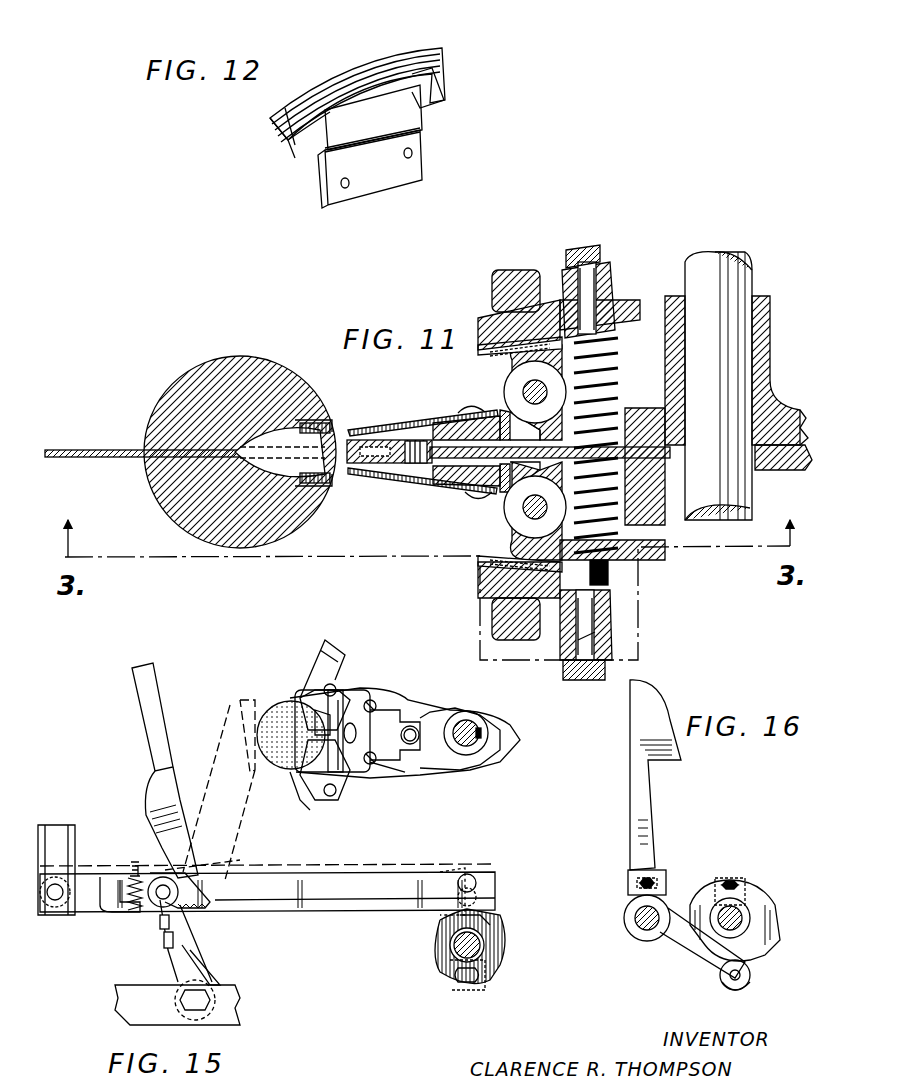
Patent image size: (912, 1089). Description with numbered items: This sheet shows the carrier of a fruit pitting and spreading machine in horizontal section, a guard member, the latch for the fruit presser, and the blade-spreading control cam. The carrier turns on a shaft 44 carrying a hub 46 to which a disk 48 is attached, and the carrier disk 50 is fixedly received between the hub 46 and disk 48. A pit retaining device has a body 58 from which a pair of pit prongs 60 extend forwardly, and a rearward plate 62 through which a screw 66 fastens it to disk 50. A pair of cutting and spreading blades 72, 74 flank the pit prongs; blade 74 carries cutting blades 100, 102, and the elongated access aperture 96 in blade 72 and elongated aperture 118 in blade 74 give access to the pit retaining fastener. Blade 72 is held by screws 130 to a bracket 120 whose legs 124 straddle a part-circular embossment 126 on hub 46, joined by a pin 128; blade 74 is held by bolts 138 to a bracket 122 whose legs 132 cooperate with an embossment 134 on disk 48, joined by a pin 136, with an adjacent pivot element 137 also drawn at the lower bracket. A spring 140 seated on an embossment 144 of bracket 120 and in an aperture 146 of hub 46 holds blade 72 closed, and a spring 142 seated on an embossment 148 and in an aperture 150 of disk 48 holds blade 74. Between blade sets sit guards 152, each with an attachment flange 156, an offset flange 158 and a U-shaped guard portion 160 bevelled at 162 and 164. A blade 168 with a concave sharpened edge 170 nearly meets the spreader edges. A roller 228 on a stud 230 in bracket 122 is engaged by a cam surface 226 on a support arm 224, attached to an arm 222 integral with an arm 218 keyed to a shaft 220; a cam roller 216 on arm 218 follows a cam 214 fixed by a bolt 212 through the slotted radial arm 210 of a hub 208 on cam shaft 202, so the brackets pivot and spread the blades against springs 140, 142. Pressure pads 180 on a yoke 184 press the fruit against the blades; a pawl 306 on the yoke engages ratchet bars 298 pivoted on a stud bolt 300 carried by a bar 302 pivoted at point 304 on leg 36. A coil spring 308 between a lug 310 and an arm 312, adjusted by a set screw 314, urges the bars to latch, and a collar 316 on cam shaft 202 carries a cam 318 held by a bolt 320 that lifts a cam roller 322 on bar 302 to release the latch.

In FIG. 15, the leg 36 is at (50, 828).
In FIG. 11, the shaft 44 is at (712, 265).
In FIG. 15, the shaft 44 is at (475, 745).
In FIG. 11, the hub 46 is at (765, 365).
In FIG. 15, the hub 46 is at (490, 733).
In FIG. 11, the disk 48 is at (775, 478).
In FIG. 15, the disk 48 is at (432, 712).
In FIG. 11, the disk 50 is at (786, 416).
In FIG. 15, the disk 50 is at (390, 690).
In FIG. 11, the body 58 is at (335, 466).
In FIG. 11, the pit prongs 60 is at (296, 425).
In FIG. 15, the pit prongs 60 is at (330, 722).
In FIG. 11, the plate 62 is at (508, 462).
In FIG. 11, the screw 66 is at (440, 425).
In FIG. 11, the cutting and spreading blade 72 is at (362, 425).
In FIG. 11, the cutting and spreading blade 74 is at (362, 487).
In FIG. 15, the cutting and spreading blade 74 is at (365, 770).
In FIG. 11, the elongated access aperture 96 is at (375, 428).
In FIG. 15, the cutting blade 100 is at (300, 790).
In FIG. 15, the cutting blade 102 is at (300, 696).
In FIG. 11, the elongated aperture 118 is at (392, 484).
In FIG. 11, the bracket 120 is at (492, 330).
In FIG. 11, the bracket 122 is at (490, 576).
In FIG. 15, the bracket 122 is at (395, 752).
In FIG. 11, the legs 124 is at (500, 352).
In FIG. 11, the part-circular embossment 126 is at (515, 382).
In FIG. 11, the pin 128 is at (523, 394).
In FIG. 11, the screws 130 is at (460, 408).
In FIG. 11, the legs 132 is at (505, 560).
In FIG. 11, the part-circular embossment 134 is at (470, 500).
In FIG. 11, the pin 136 is at (520, 520).
In FIG. 11, the lower pivot pin 137 is at (487, 506).
In FIG. 11, the bolts 138 is at (480, 500).
In FIG. 15, the bolts 138 is at (408, 765).
In FIG. 11, the spring 140 is at (603, 376).
In FIG. 11, the spring 142 is at (620, 512).
In FIG. 11, the embossment 144 is at (615, 330).
In FIG. 11, the aperture 146 is at (628, 412).
In FIG. 11, the embossment 148 is at (615, 580).
In FIG. 11, the aperture 150 is at (625, 480).
In FIG. 12, the guard 152 is at (310, 178).
In FIG. 15, the guard 152 is at (318, 640).
In FIG. 12, the attachment flange 156 is at (385, 178).
In FIG. 12, the offset flange 158 is at (390, 119).
In FIG. 12, the guard portion 160 is at (290, 138).
In FIG. 12, the bevel 162 is at (270, 122).
In FIG. 12, the bevel 164 is at (378, 75).
In FIG. 11, the blade 168 is at (105, 458).
In FIG. 11, the sharpened edge 170 is at (190, 480).
In FIG. 15, the pressure pads 180 is at (152, 690).
In FIG. 15, the yoke 184 is at (170, 825).
In FIG. 15, the cam shaft 202 is at (475, 940).
In FIG. 16, the cam shaft 202 is at (748, 910).
In FIG. 16, the hub 208 is at (715, 905).
In FIG. 16, the radial arm 210 is at (755, 855).
In FIG. 16, the bolt 212 is at (730, 880).
In FIG. 16, the cam 214 is at (775, 925).
In FIG. 16, the cam roller 216 is at (740, 988).
In FIG. 16, the arm 218 is at (700, 960).
In FIG. 16, the shaft 220 is at (645, 930).
In FIG. 16, the arm 222 is at (628, 888).
In FIG. 16, the support arm 224 is at (638, 800).
In FIG. 11, the cam surface 226 is at (560, 300).
In FIG. 16, the cam surface 226 is at (665, 700).
In FIG. 11, the roller 228 is at (595, 280).
In FIG. 15, the roller 228 is at (425, 745).
In FIG. 11, the stud 230 is at (590, 635).
In FIG. 15, the ratchet bars 298 is at (195, 870).
In FIG. 15, the stud bolt 300 is at (160, 920).
In FIG. 15, the bar 302 is at (365, 874).
In FIG. 15, the pivot point 304 is at (58, 900).
In FIG. 15, the pawl 306 is at (165, 960).
In FIG. 15, the coil spring 308 is at (118, 885).
In FIG. 15, the lug 310 is at (140, 912).
In FIG. 15, the arm 312 is at (100, 868).
In FIG. 15, the set screw 314 is at (128, 862).
In FIG. 15, the collar 316 is at (450, 950).
In FIG. 15, the cam 318 is at (490, 975).
In FIG. 15, the bolt 320 is at (462, 985).
In FIG. 15, the cam roller 322 is at (450, 917).